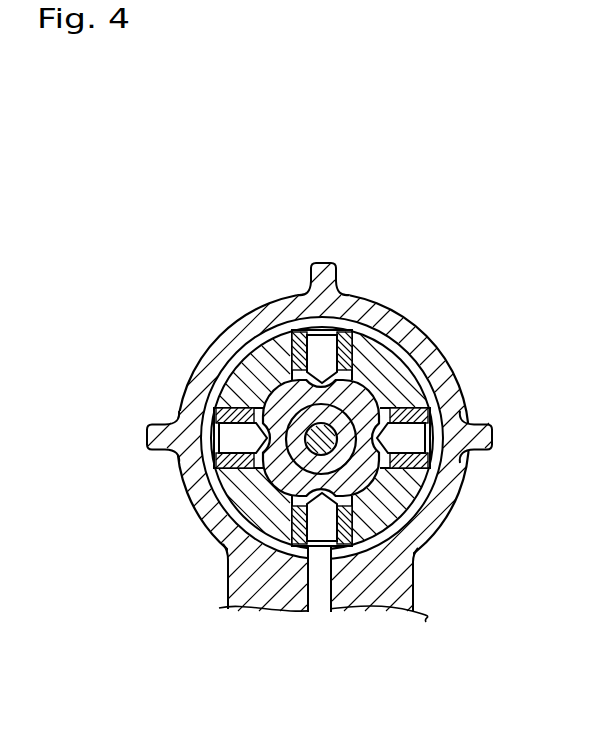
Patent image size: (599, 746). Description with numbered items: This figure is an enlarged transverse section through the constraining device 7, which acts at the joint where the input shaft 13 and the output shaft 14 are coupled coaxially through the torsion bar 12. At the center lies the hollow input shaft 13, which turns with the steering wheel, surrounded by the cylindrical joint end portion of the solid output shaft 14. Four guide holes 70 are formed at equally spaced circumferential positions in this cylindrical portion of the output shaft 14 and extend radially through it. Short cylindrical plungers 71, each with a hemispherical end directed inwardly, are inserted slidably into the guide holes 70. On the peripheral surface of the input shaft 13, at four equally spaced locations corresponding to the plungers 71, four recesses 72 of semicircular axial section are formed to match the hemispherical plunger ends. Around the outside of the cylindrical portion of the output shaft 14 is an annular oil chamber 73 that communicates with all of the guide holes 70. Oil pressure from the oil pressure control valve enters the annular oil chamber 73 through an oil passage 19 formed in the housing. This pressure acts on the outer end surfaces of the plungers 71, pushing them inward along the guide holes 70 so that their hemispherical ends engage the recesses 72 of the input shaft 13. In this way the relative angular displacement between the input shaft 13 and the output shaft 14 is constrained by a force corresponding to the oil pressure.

The constraining device 7 is at (185, 337).
The torsion bar 12 is at (222, 545).
The input shaft 13 is at (248, 488).
The output shaft 14 is at (395, 512).
The oil passage 19 is at (309, 597).
The guide holes 70 is at (344, 350).
The plungers 71 is at (329, 352).
The recesses 72 is at (303, 350).
The annular oil chamber 73 is at (408, 349).